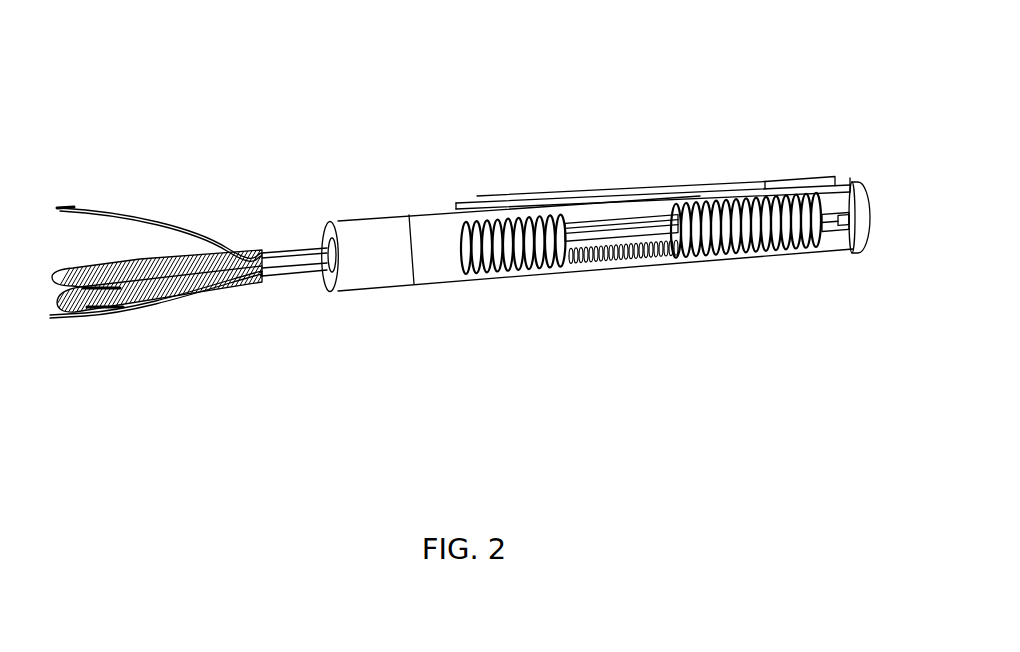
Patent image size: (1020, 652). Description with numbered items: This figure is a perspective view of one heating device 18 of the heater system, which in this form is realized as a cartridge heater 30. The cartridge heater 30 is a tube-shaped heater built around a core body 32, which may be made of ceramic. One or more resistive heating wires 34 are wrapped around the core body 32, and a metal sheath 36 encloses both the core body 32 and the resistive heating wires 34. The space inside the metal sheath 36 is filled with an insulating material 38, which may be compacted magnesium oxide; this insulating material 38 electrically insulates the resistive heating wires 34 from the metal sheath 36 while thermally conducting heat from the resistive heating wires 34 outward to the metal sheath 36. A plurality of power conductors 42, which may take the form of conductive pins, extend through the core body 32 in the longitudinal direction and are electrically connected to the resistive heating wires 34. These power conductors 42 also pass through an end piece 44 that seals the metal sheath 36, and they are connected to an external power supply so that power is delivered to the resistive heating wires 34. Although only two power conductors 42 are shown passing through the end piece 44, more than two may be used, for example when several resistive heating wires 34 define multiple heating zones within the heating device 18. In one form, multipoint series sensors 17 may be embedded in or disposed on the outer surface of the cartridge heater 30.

The multipoint series sensor 17 is at (816, 178).
The heating device 18 is at (803, 78).
The cartridge heater 30 is at (586, 86).
The core body 32 is at (516, 260).
The resistive heating wire 34 is at (716, 253).
The metal sheath 36 is at (760, 184).
The insulating material 38 is at (484, 213).
The power conductor 42 is at (649, 224).
The end piece 44 is at (318, 220).